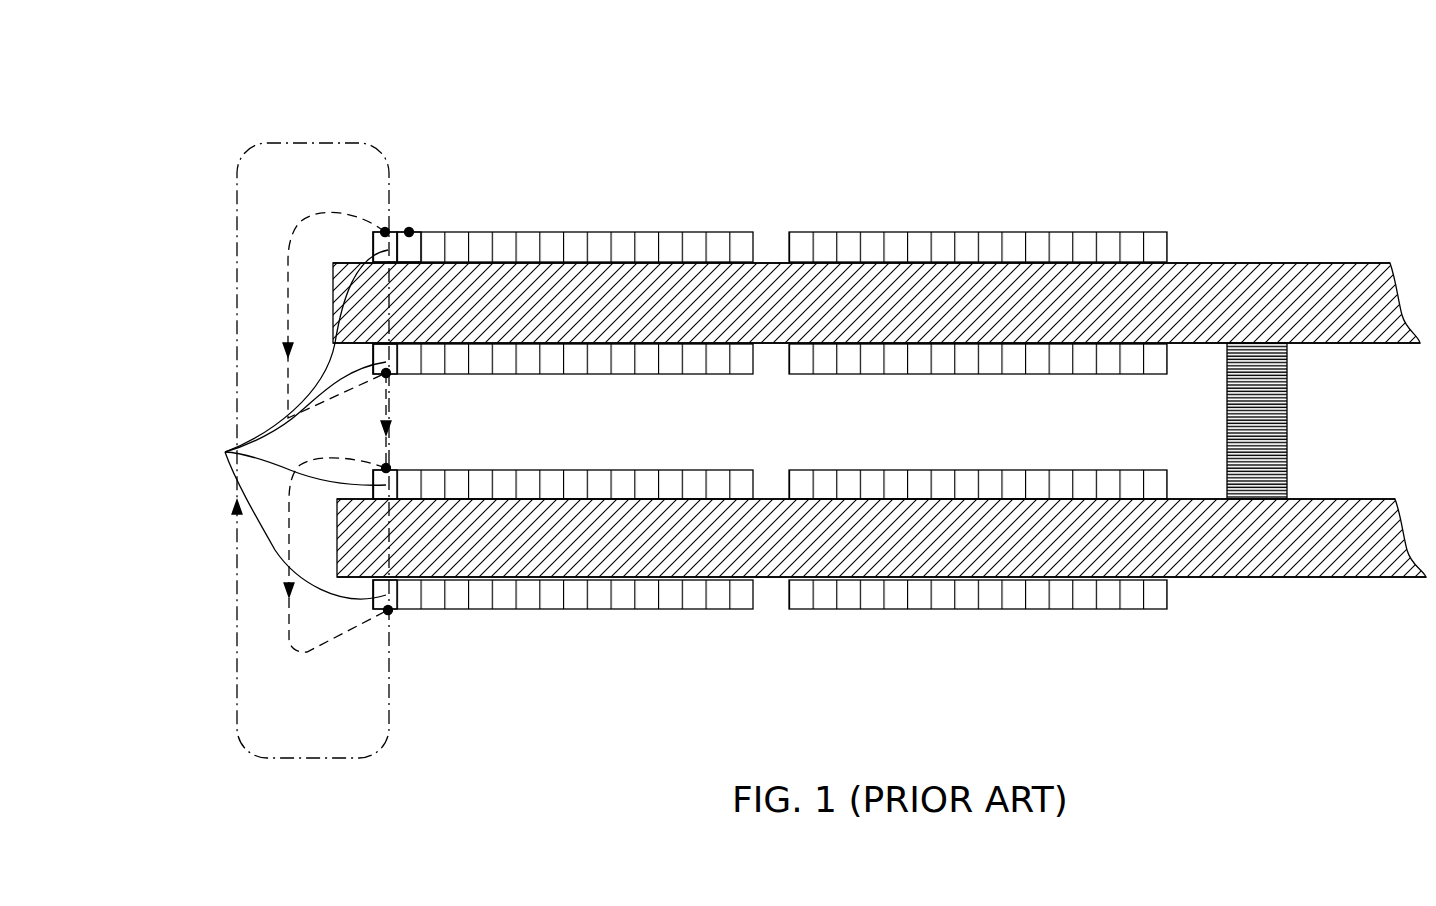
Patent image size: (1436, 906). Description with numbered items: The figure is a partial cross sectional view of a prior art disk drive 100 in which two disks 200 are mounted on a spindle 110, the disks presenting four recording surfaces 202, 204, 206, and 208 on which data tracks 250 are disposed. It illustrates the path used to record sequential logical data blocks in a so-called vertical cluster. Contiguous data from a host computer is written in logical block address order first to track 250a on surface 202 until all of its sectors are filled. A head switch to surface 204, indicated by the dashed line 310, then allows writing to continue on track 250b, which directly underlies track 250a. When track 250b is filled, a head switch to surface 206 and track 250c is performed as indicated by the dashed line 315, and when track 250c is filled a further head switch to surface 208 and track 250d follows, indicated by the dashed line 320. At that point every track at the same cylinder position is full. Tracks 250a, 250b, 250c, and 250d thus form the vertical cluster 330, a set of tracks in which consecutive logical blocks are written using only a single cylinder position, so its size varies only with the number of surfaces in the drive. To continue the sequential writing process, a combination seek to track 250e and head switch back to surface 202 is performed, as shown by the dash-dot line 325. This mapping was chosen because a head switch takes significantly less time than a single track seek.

The disk drive 100 is at (840, 58).
The spindle 110 is at (1287, 425).
The disks 200 is at (1366, 262).
The surface 202 is at (1302, 262).
The surface 204 is at (1353, 345).
The surface 206 is at (1338, 497).
The surface 208 is at (1345, 580).
The data tracks 250 is at (615, 222).
The track 250a is at (385, 232).
The track 250b is at (386, 373).
The track 250c is at (386, 468).
The track 250d is at (388, 610).
The track 250e is at (409, 232).
The dashed line 310 is at (305, 214).
The dashed line 315 is at (383, 439).
The dashed line 320 is at (318, 655).
The dash-dot line 325 is at (257, 754).
The vertical cluster 330 is at (225, 452).